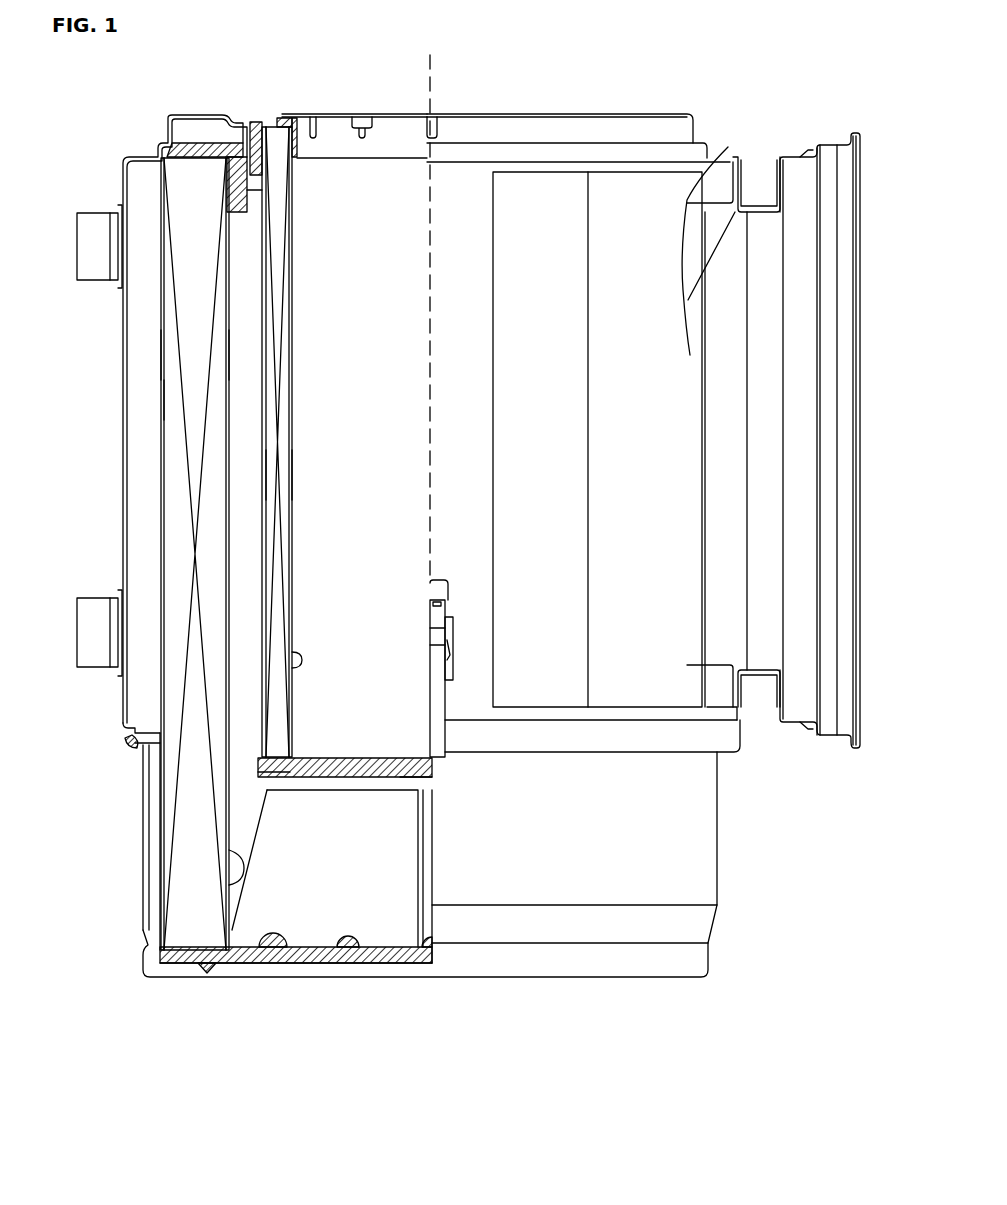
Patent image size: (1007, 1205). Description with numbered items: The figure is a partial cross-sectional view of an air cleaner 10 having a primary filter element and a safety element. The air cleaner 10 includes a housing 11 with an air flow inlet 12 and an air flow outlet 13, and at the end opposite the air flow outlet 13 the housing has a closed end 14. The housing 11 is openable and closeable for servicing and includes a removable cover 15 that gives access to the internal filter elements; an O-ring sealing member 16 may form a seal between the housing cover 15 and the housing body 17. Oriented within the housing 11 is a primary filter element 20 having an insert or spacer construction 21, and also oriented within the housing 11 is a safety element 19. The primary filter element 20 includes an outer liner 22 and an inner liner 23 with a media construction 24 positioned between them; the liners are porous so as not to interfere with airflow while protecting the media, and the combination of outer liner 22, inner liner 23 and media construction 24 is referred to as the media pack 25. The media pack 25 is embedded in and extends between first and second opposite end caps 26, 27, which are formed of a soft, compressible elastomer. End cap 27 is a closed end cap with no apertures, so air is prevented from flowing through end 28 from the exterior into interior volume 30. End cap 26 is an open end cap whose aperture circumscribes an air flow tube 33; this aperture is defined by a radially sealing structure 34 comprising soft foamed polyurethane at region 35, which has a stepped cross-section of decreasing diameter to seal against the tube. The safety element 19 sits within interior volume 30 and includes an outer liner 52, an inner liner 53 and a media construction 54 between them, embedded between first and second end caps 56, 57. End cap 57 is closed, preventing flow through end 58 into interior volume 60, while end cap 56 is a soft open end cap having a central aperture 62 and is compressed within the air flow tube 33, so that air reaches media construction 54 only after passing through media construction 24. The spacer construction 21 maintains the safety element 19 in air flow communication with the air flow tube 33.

The air cleaner 10 is at (560, 74).
The housing 11 is at (598, 114).
The air flow inlet 12 is at (855, 162).
The air flow outlet 13 is at (438, 114).
The closed end 14 is at (592, 978).
The removable cover 15 is at (717, 833).
The O-ring sealing member 16 is at (128, 748).
The housing body 17 is at (121, 470).
The safety element 19 is at (255, 603).
The primary filter element 20 is at (132, 307).
The spacer construction 21 is at (255, 795).
The outer liner 22 is at (163, 345).
The inner liner 23 is at (230, 352).
The media construction 24 is at (173, 400).
The media pack 25 is at (155, 528).
The first end cap 26 is at (178, 157).
The second end cap 27 is at (300, 965).
The end 28 is at (375, 965).
The interior volume 30 is at (230, 878).
The air flow tube 33 is at (250, 180).
The radially sealing structure 34 is at (256, 122).
The region 35 is at (240, 200).
The outer liner 52 is at (264, 480).
The inner liner 53 is at (293, 472).
The media construction 54 is at (290, 403).
The first end cap 56 is at (283, 125).
The second end cap 57 is at (354, 762).
The end 58 is at (405, 777).
The interior volume 60 is at (292, 657).
The central aperture 62 is at (297, 148).